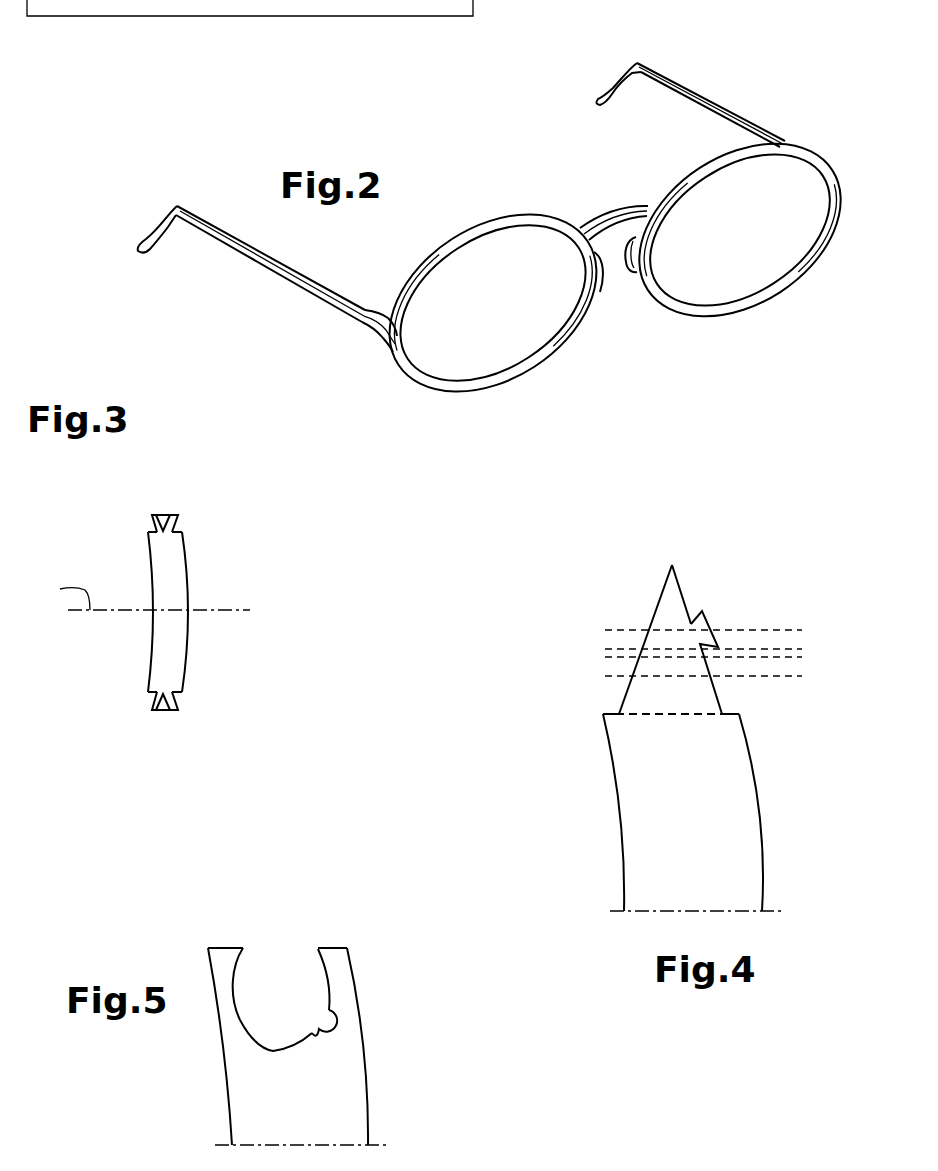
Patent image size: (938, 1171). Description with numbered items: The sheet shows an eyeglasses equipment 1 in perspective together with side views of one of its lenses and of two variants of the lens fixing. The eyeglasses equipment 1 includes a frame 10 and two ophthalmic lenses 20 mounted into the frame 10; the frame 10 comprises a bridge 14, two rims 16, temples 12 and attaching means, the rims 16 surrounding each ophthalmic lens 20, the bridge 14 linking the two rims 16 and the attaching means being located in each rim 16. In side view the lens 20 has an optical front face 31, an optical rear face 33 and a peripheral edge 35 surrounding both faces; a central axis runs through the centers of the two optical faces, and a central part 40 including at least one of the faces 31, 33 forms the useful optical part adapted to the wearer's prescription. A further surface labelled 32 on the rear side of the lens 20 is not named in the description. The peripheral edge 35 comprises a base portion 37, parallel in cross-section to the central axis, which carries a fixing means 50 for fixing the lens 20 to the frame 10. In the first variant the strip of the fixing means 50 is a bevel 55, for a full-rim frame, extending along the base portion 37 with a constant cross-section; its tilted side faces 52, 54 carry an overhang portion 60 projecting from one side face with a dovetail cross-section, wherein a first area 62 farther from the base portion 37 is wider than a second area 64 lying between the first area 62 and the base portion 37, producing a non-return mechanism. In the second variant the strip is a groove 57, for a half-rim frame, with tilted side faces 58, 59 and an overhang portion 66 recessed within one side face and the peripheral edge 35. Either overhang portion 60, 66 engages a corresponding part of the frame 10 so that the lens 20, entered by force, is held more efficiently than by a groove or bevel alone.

In FIG. 2, the eyeglasses equipment 1 is at (511, 234).
In FIG. 2, the frame 10 is at (505, 234).
In FIG. 2, the temples 12 is at (671, 86).
In FIG. 2, the bridge 14 is at (614, 223).
In FIG. 2, the rims 16 is at (578, 302).
In FIG. 2, the ophthalmic lens 20 is at (483, 331).
In FIG. 3, the ophthalmic lens 20 is at (169, 607).
In FIG. 4, the ophthalmic lens 20 is at (687, 717).
In FIG. 5, the ophthalmic lens 20 is at (310, 1007).
In FIG. 3, the optical front face 31 is at (265, 530).
In FIG. 4, the optical front face 31 is at (764, 853).
In FIG. 5, the optical front face 31 is at (365, 1078).
In FIG. 4, the rear surface of lens 32 is at (615, 770).
In FIG. 5, the rear surface of lens 32 is at (226, 1068).
In FIG. 3, the optical rear face 33 is at (153, 626).
In FIG. 3, the peripheral edge 35 is at (168, 607).
In FIG. 3, the base portion 37 is at (178, 520).
In FIG. 4, the base portion 37 is at (736, 707).
In FIG. 5, the base portion 37 is at (333, 948).
In FIG. 3, the central part 40 is at (202, 611).
In FIG. 4, the central part 40 is at (689, 812).
In FIG. 5, the central part 40 is at (304, 1046).
In FIG. 4, the fixing means 50 is at (670, 623).
In FIG. 4, the side face 52 is at (718, 693).
In FIG. 4, the side face 54 is at (622, 700).
In FIG. 3, the bevel 55 is at (163, 517).
In FIG. 4, the bevel 55 is at (663, 592).
In FIG. 5, the groove 57 is at (274, 1044).
In FIG. 5, the side face 58 is at (237, 960).
In FIG. 5, the side face 59 is at (305, 960).
In FIG. 4, the overhang portion 60 is at (716, 617).
In FIG. 4, the first area 62 is at (806, 631).
In FIG. 4, the second area 64 is at (806, 656).
In FIG. 5, the overhang portion 66 is at (335, 1007).